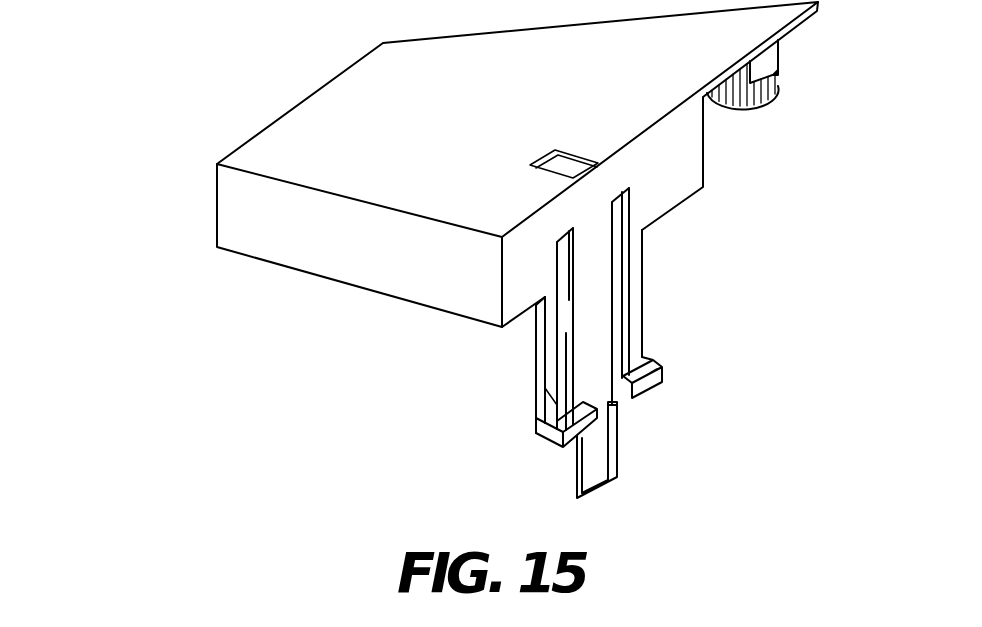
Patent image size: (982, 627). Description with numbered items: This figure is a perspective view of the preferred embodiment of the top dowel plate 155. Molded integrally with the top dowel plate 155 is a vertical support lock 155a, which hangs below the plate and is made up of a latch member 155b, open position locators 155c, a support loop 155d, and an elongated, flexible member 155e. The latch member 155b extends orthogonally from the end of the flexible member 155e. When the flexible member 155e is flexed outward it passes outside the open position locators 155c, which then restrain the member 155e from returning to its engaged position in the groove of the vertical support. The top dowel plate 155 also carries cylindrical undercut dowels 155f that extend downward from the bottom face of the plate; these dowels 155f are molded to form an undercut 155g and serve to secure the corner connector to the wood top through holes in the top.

The top dowel plate 155 is at (190, 227).
The vertical support lock 155a is at (517, 390).
The latch member 155b is at (643, 258).
The open position locators 155c is at (663, 367).
The support loop 155d is at (630, 445).
The elongated flexible member 155e is at (595, 320).
The undercut dowels 155f is at (770, 102).
The undercut 155g is at (778, 70).